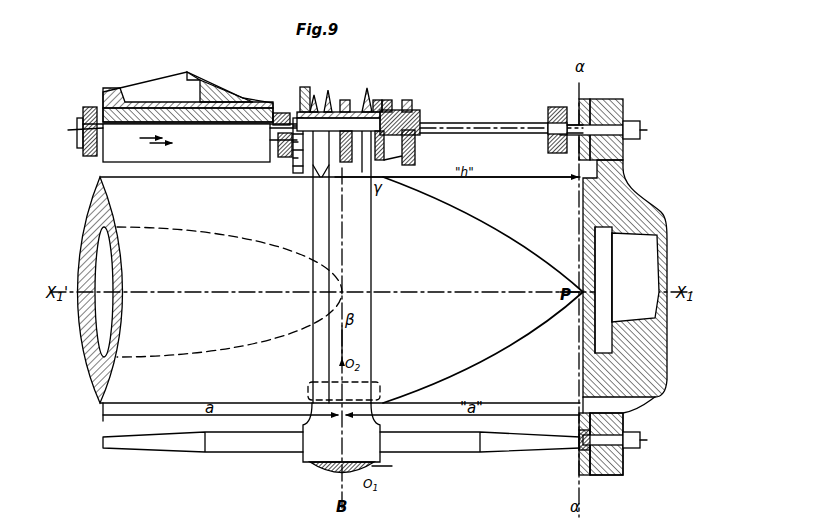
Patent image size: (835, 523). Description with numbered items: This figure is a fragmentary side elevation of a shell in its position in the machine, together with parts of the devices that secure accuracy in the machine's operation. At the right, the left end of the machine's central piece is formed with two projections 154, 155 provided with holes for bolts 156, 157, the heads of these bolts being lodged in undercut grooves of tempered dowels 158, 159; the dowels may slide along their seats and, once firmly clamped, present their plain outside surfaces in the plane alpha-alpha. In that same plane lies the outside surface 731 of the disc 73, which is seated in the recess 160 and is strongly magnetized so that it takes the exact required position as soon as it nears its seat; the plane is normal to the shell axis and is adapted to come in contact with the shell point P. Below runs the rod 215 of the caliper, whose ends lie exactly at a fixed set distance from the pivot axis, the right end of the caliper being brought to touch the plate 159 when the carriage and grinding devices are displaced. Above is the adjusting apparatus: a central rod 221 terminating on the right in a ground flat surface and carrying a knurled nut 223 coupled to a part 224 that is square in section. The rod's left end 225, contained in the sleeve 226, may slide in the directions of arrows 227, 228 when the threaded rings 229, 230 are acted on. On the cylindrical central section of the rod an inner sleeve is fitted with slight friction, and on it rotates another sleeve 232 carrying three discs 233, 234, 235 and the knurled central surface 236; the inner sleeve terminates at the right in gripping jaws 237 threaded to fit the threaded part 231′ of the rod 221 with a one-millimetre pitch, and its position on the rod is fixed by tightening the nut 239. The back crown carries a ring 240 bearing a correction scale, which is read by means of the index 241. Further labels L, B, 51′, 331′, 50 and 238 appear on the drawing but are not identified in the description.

The rod 215 is at (341, 442).
The lens cap L is at (388, 466).
The flange body B is at (652, 196).
The projection 154 is at (624, 112).
The tempered dowel 158 is at (580, 152).
The bolt 156 is at (637, 131).
The recess 160 is at (603, 208).
The outside surface of disc 731 is at (579, 320).
The disc 73 is at (579, 356).
The projection 155 is at (623, 470).
The bolt 157 is at (628, 437).
The tempered dowel 159 is at (582, 447).
The central rod 221 is at (484, 134).
The knurled nut 223 is at (552, 107).
The part square in section 224 is at (550, 140).
The sleeve 226 is at (182, 104).
The housing lug 51′ is at (174, 66).
The rod left end 225 is at (191, 128).
The arrow 227 is at (186, 143).
The arrow 228 is at (162, 152).
The threaded ring 229 is at (90, 110).
The index 241 is at (287, 128).
The threaded ring 230 is at (281, 112).
The ring 240 is at (296, 160).
The post 331′ is at (316, 83).
The sleeve 232 is at (331, 108).
The block 50 is at (346, 100).
The disc 235 is at (378, 107).
The nut 239 is at (385, 100).
The gripping jaws 237 is at (396, 110).
The block 238 is at (413, 108).
The cylindrical threaded part 231′ is at (422, 132).
The disc 233 is at (313, 180).
The knurled central surface 236 is at (348, 177).
The disc 234 is at (313, 205).